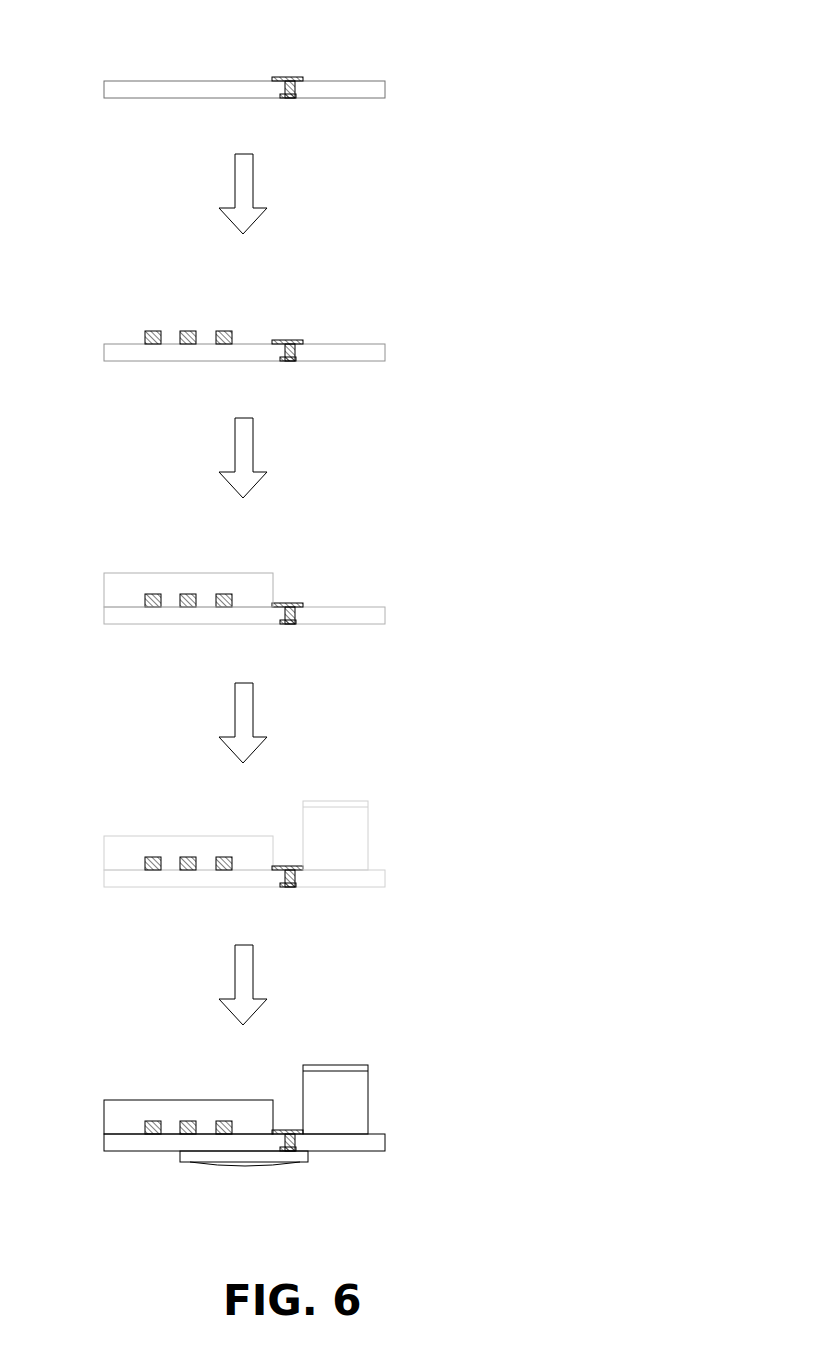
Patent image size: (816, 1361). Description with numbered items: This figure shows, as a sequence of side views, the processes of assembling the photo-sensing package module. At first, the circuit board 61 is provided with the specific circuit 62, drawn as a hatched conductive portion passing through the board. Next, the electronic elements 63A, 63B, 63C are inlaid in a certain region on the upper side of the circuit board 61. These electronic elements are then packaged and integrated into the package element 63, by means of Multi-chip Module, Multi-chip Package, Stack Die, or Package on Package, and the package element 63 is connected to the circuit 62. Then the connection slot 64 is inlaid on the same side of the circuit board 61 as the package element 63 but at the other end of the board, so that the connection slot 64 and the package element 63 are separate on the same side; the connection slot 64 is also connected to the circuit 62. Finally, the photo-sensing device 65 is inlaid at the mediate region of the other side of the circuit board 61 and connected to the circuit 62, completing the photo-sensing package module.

The circuit board 61 is at (388, 91).
The circuit 62 is at (297, 75).
The electronic element 63A is at (153, 330).
The electronic element 63B is at (189, 330).
The electronic element 63C is at (224, 330).
The package element 63 is at (130, 572).
The connection slot 64 is at (372, 826).
The photo-sensing device 65 is at (301, 1169).